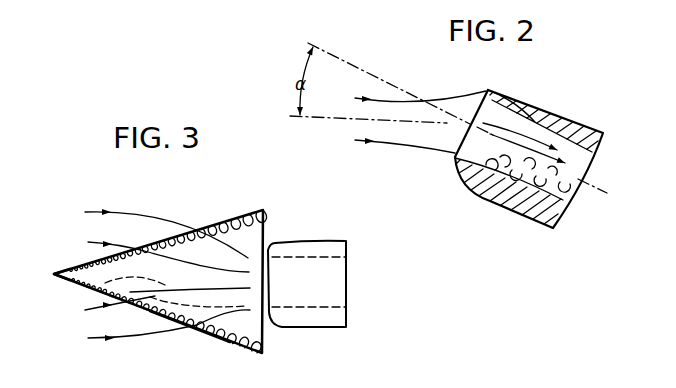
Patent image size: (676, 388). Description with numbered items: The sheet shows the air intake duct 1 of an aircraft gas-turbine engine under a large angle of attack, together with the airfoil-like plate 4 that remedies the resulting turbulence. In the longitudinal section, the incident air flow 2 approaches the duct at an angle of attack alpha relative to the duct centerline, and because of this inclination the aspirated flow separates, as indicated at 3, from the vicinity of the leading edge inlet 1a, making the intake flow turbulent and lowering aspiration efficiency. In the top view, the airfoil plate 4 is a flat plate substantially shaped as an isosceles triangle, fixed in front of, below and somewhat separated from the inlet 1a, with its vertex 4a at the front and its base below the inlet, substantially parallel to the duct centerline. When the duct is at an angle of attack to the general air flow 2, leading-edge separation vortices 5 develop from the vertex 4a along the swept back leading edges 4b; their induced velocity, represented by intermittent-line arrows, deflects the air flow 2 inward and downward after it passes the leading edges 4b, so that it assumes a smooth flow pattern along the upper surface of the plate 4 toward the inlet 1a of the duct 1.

In FIG. 2, the air intake duct 1 is at (556, 117).
In FIG. 3, the air intake duct 1 is at (340, 241).
In FIG. 2, the leading edge inlet 1a is at (482, 98).
In FIG. 2, the air flow 2 is at (358, 98).
In FIG. 3, the air flow 2 is at (87, 240).
In FIG. 2, the air flow separation 3 is at (508, 172).
In FIG. 3, the airfoil-like plate 4 is at (228, 220).
In FIG. 3, the vertex 4a is at (55, 273).
In FIG. 3, the swept back leading edge 4b is at (192, 333).
In FIG. 3, the leading-edge separation vortices 5 is at (270, 232).